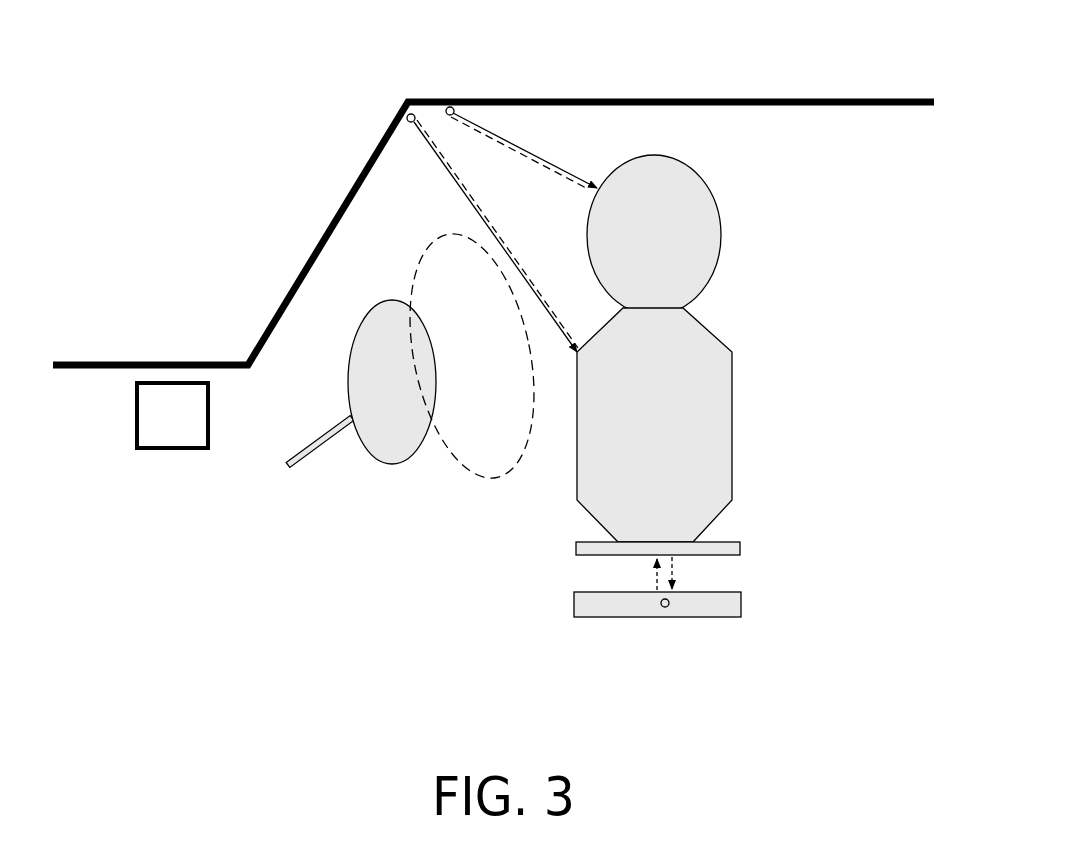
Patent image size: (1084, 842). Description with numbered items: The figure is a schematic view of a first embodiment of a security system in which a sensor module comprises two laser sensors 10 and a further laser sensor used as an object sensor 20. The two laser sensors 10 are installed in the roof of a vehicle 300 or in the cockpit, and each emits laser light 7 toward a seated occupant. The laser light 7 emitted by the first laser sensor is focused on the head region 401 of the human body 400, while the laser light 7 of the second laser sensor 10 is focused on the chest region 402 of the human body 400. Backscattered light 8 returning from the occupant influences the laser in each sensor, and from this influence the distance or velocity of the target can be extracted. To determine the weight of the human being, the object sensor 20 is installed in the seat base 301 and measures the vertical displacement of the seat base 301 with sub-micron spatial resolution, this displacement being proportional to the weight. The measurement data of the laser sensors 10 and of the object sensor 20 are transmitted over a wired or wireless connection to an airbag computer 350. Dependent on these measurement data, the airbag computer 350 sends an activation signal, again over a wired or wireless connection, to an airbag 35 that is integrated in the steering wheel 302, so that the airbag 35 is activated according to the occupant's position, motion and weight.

The vehicle 300 is at (848, 98).
The airbag computer 350 is at (197, 427).
The steering wheel 302 is at (353, 390).
The airbag 35 is at (462, 443).
The laser sensor 10 is at (449, 106).
The laser light 7 is at (484, 218).
The backscattered light 8 is at (505, 142).
The human body 400 is at (700, 348).
The head region 401 is at (597, 222).
The chest region 402 is at (590, 402).
The seat base 301 is at (727, 547).
The object sensor 20 is at (664, 607).